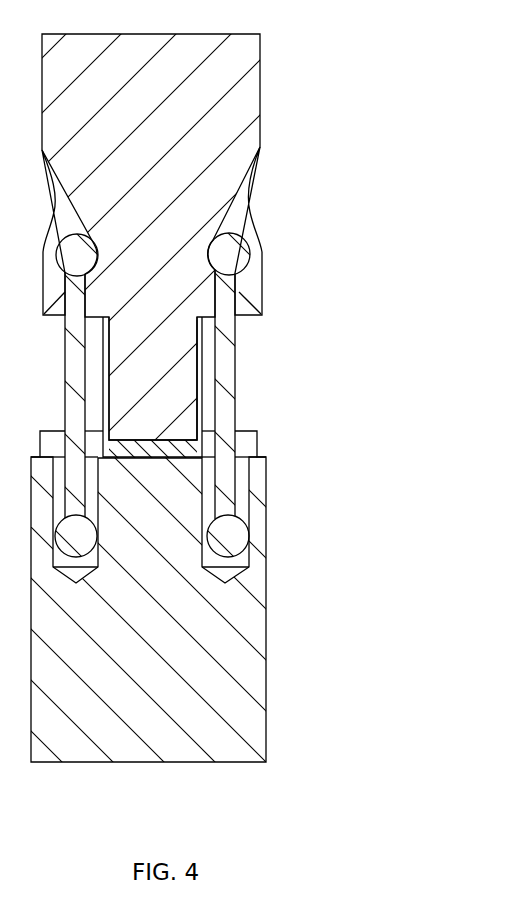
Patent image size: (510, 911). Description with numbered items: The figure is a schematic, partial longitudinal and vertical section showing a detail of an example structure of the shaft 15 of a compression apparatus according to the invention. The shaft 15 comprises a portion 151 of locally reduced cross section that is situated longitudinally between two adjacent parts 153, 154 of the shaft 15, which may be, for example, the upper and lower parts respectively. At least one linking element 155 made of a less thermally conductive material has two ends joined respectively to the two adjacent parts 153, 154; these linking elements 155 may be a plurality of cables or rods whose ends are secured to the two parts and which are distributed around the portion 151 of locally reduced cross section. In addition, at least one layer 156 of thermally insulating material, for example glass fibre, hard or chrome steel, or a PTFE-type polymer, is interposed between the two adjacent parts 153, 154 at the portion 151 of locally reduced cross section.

The shaft 15 is at (393, 172).
The portion of locally reduced cross section 151 is at (203, 386).
The adjacent part of the shaft 153 is at (217, 137).
The adjacent part of the shaft 154 is at (233, 640).
The linking element 155 is at (238, 340).
The layer of thermally insulating material 156 is at (200, 448).